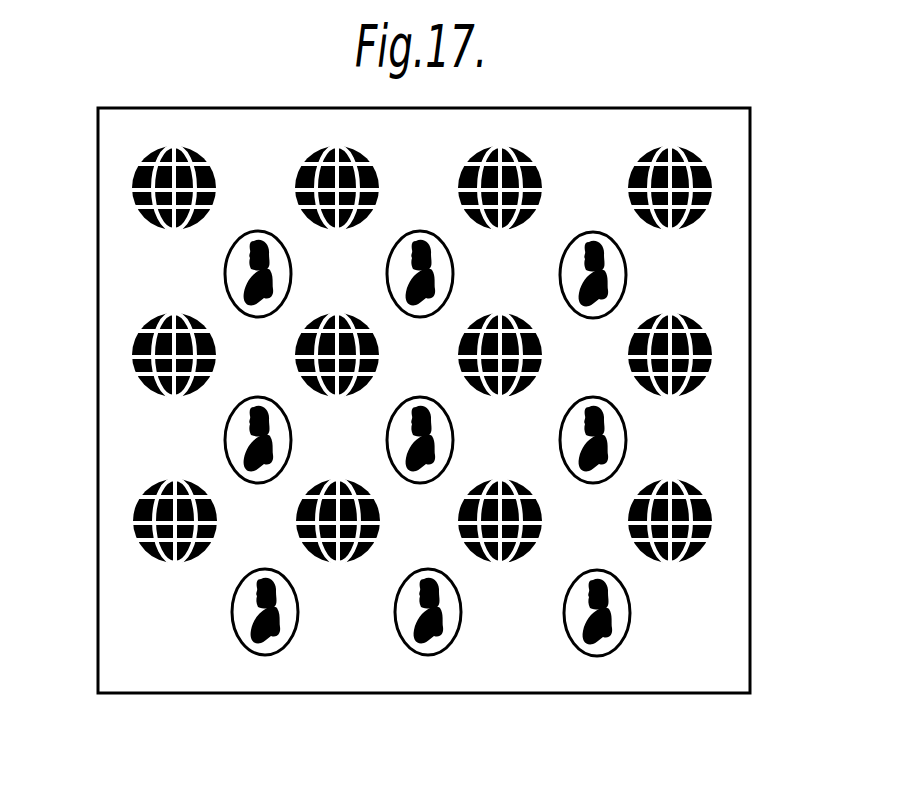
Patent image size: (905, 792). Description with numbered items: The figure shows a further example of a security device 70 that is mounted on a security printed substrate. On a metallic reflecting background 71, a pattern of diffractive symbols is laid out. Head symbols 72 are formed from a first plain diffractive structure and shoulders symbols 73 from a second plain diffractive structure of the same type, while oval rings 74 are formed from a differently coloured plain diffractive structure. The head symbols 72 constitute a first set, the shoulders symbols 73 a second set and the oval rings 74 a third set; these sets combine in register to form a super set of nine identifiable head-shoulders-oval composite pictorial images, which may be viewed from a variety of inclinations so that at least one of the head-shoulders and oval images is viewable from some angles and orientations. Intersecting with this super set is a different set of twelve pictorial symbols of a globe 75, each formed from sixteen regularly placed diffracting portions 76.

The security device 70 is at (753, 280).
The metallic reflecting background 71 is at (603, 649).
The head symbols 72 is at (606, 590).
The shoulders symbols 73 is at (609, 622).
The oval rings 74 is at (562, 628).
The globe 75 is at (705, 175).
The diffracting portions 76 is at (132, 198).